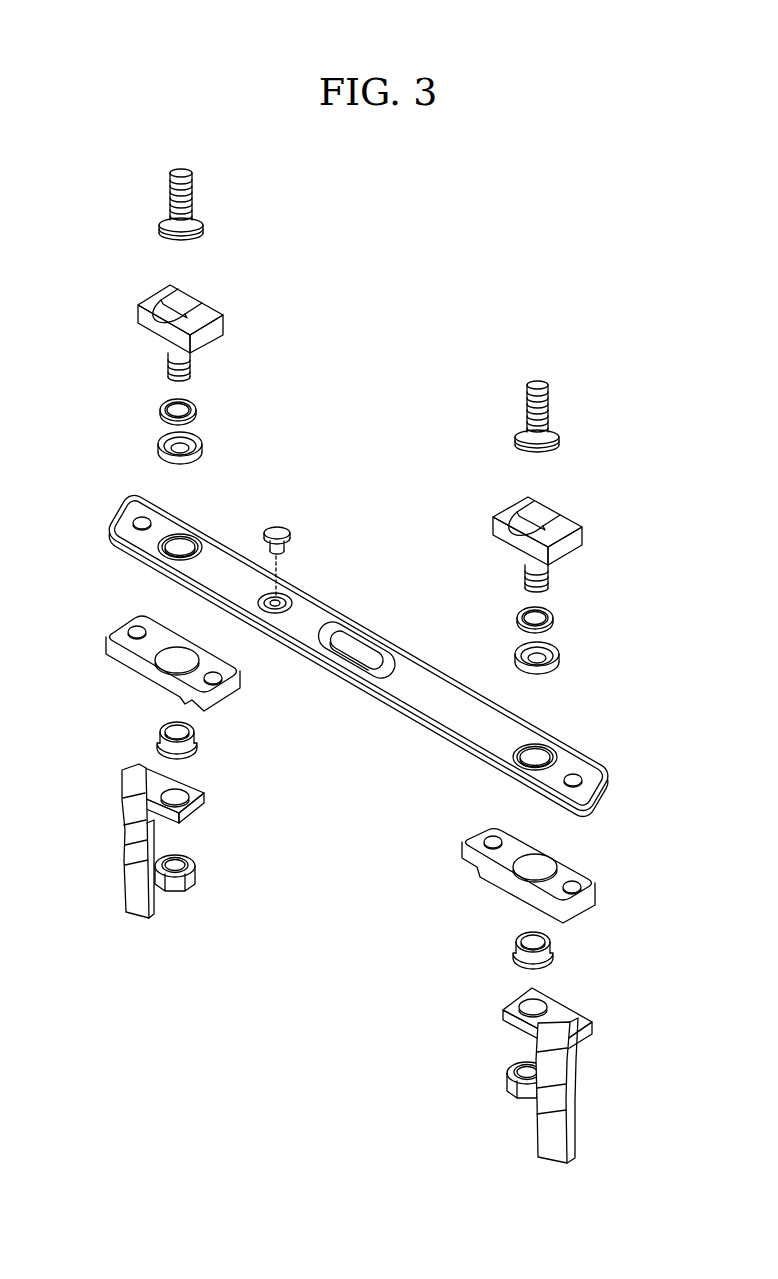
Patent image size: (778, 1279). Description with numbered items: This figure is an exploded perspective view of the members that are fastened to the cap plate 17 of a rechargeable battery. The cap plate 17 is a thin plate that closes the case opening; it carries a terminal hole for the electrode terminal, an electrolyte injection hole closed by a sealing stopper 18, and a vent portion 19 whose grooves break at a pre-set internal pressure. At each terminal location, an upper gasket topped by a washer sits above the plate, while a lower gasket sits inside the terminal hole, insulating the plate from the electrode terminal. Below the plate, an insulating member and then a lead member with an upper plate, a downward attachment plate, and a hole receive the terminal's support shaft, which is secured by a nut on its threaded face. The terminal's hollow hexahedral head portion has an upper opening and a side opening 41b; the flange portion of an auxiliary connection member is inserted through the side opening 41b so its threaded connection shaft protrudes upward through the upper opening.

The cap plate 17 is at (374, 629).
The sealing stopper 18 is at (282, 529).
The vent portion 19 is at (365, 650).
The side opening 41b is at (142, 317).